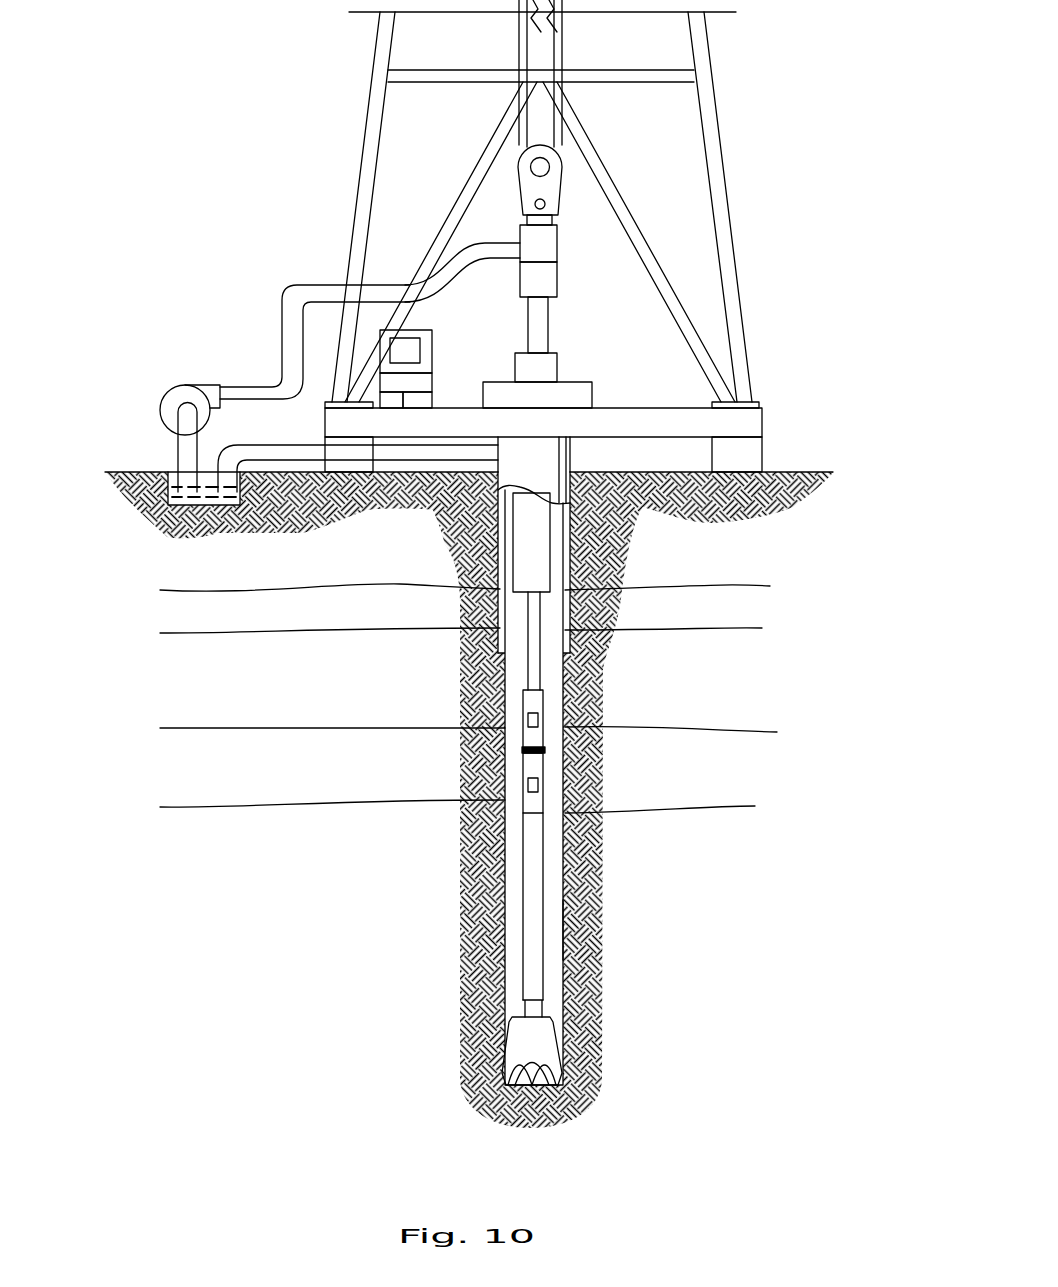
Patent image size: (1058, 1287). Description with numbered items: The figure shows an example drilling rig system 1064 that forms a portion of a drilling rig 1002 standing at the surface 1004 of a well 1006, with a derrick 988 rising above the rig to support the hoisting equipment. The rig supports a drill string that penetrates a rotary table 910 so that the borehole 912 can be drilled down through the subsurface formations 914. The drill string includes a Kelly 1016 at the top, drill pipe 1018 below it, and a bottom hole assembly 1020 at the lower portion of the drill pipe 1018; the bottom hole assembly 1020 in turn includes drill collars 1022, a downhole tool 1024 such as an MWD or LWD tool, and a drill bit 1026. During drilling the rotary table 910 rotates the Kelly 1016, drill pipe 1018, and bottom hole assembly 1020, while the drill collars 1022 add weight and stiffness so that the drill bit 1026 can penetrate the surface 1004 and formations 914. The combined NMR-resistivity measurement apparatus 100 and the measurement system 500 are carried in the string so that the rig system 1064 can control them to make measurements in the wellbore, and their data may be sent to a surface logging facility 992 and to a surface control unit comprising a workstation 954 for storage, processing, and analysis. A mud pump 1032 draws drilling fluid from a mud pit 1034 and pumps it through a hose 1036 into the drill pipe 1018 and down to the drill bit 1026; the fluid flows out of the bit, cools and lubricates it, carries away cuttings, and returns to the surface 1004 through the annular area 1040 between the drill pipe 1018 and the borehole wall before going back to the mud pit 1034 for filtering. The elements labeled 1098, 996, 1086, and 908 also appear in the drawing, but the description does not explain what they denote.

The drilling rig system 1064 is at (237, 102).
The derrick 988 is at (713, 97).
The drilling rig 1002 is at (735, 196).
The Kelly 1016 is at (549, 316).
The rotary drive 1098 is at (558, 366).
The rotary table 910 is at (502, 382).
The workstation 954 is at (433, 340).
The processor 996 is at (433, 352).
The surface logging facility 992 is at (423, 328).
The hose 1036 is at (289, 333).
The mud pump 1032 is at (193, 383).
The mud pit 1034 is at (188, 505).
The rig floor 1086 is at (763, 417).
The well 1006 is at (582, 467).
The surface 1004 is at (785, 472).
The drill collars 1022 is at (551, 552).
The annular area 1040 is at (556, 681).
The drill pipe 1018 is at (534, 628).
The combined NMR-resistivity measurement apparatus 100 is at (549, 703).
The measurement system 500 is at (550, 789).
The drill collar 908 is at (551, 870).
The borehole 912 is at (565, 950).
The downhole tool 1024 is at (532, 982).
The drill bit 1026 is at (540, 1040).
The bottom hole assembly 1020 is at (460, 648).
The subsurface formations 914 is at (142, 588).